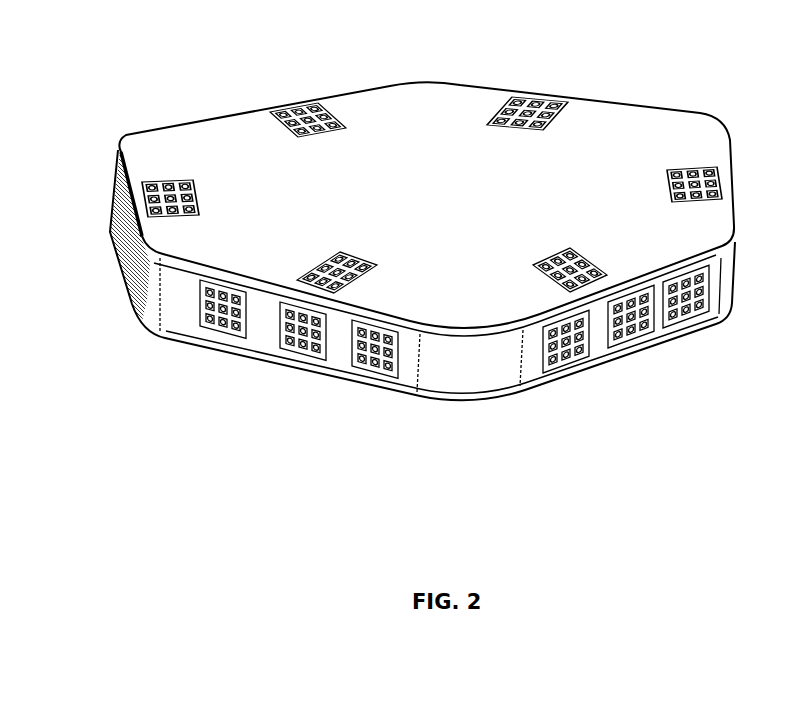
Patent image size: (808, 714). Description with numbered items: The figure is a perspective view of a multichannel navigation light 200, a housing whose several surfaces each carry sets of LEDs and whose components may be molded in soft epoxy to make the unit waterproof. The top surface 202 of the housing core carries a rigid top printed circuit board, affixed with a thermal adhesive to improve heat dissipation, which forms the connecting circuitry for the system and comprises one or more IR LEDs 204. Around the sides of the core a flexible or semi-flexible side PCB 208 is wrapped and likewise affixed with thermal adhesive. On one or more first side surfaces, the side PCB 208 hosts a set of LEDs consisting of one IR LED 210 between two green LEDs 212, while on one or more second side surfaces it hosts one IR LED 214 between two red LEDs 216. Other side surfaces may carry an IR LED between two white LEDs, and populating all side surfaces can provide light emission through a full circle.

The multichannel navigation light 200 is at (112, 83).
The top surface 202 is at (413, 196).
The IR LEDs 204 is at (531, 100).
The side PCB 208 is at (478, 373).
The IR LED 210 is at (300, 348).
The green LEDs 212 is at (227, 330).
The IR LED 214 is at (630, 345).
The red LEDs 216 is at (570, 362).